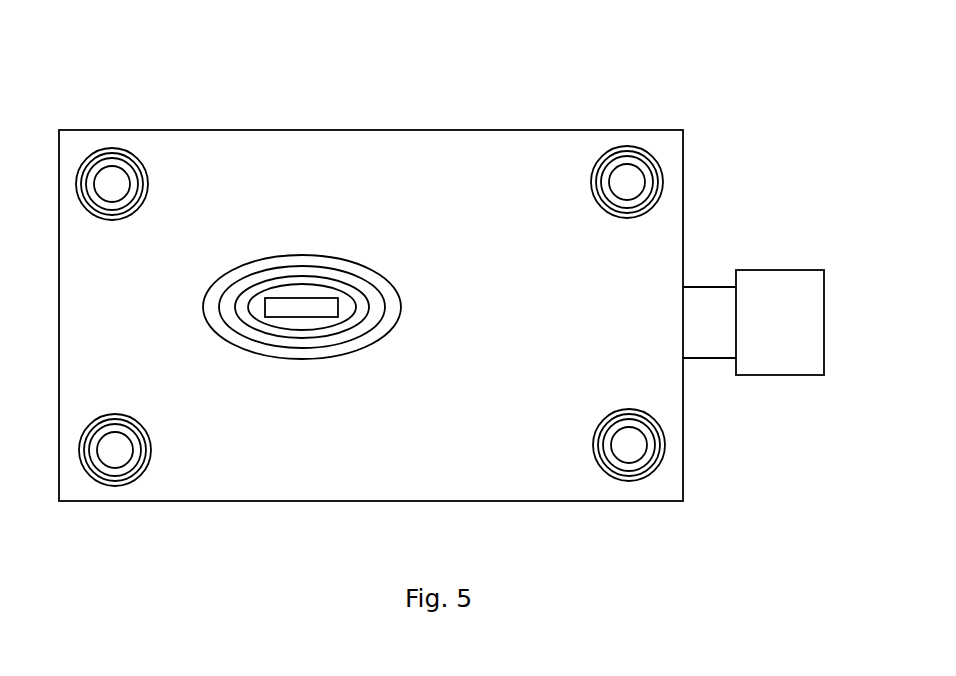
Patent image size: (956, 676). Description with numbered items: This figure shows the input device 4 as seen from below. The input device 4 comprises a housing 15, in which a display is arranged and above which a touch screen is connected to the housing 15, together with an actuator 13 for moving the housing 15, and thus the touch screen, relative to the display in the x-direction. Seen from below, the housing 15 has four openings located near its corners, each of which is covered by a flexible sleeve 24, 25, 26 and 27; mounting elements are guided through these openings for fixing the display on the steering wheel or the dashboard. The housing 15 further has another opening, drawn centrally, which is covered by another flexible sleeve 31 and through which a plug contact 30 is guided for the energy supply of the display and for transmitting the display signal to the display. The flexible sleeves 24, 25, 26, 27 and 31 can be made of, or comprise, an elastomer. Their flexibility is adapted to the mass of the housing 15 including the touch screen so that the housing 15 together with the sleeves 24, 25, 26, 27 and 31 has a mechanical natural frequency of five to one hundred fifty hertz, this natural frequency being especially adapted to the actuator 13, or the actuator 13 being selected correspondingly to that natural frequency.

The input device 4 is at (762, 77).
The actuator 13 is at (771, 293).
The housing 15 is at (468, 162).
The flexible sleeve 24 is at (610, 170).
The flexible sleeve 25 is at (657, 445).
The flexible sleeve 26 is at (112, 155).
The flexible sleeve 27 is at (98, 472).
The plug contact 30 is at (277, 305).
The flexible sleeve 31 is at (328, 260).